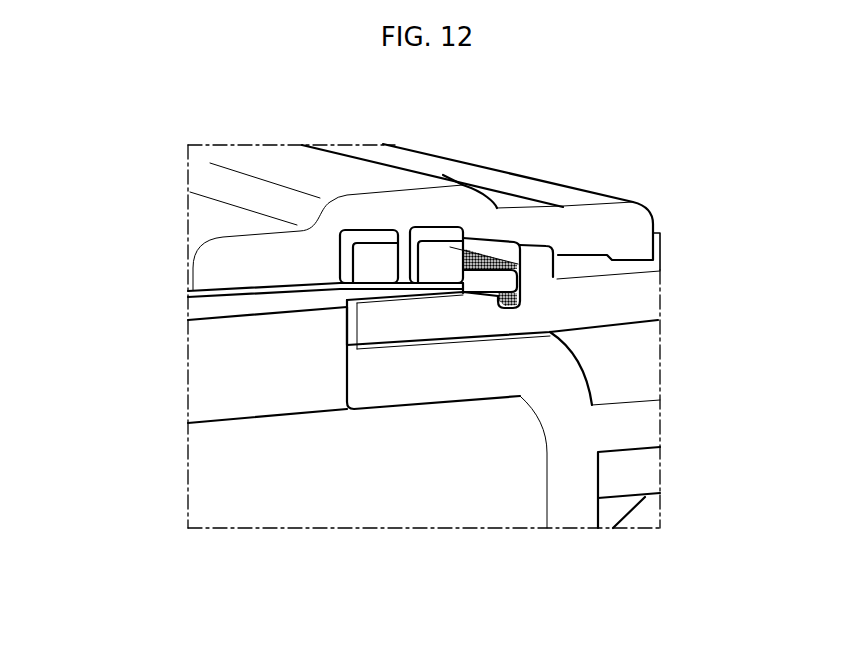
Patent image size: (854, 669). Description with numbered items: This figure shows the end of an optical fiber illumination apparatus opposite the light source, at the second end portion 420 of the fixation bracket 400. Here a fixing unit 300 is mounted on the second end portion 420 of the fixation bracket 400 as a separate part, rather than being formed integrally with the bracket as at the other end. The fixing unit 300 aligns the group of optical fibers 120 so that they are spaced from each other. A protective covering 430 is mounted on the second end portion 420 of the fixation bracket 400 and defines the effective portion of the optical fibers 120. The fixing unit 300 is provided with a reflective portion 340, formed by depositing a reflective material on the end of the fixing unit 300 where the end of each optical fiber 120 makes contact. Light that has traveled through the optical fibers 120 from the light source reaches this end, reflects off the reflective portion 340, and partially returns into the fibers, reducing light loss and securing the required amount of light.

The optical fibers 120 is at (257, 302).
The fixing unit 300 is at (412, 320).
The reflective portion 340 is at (484, 262).
The fixation bracket 400 is at (455, 518).
The second end portion 420 is at (553, 372).
The protective covering 430 is at (387, 205).